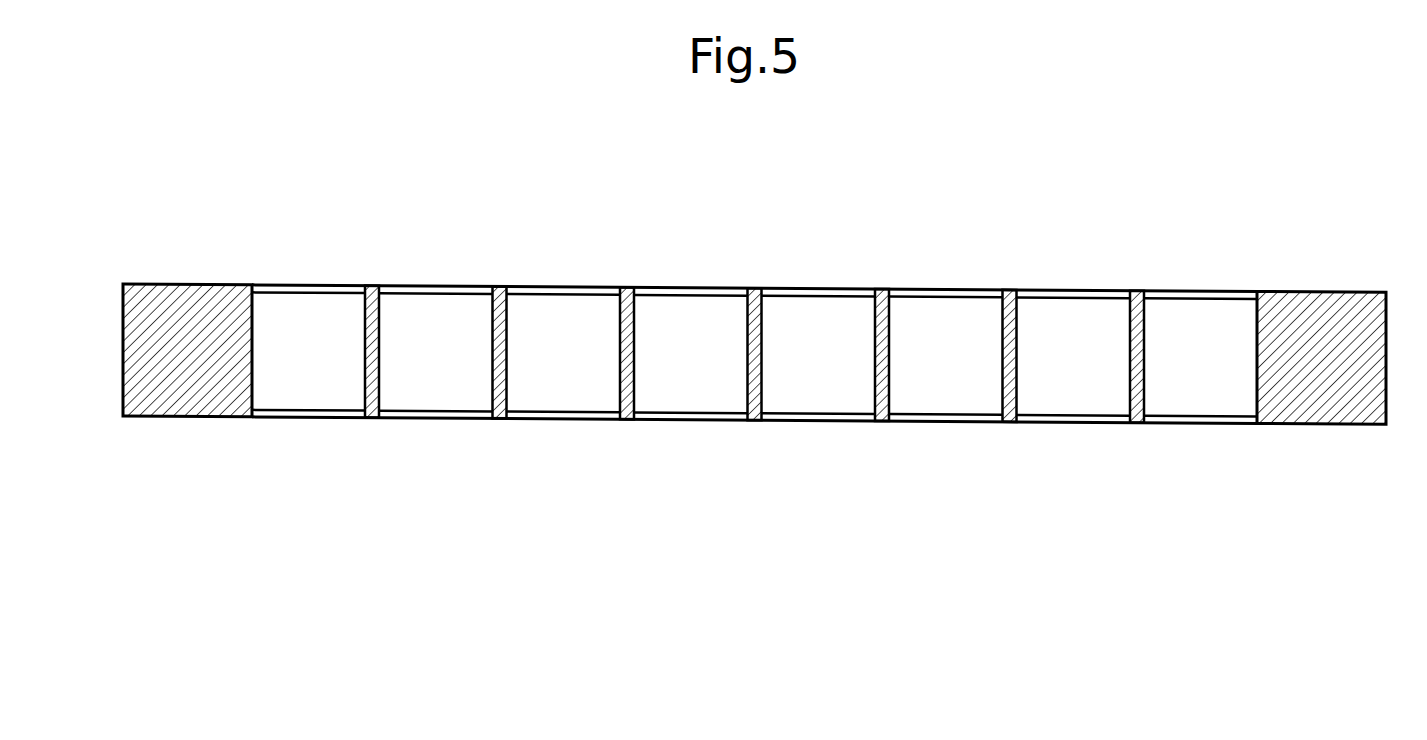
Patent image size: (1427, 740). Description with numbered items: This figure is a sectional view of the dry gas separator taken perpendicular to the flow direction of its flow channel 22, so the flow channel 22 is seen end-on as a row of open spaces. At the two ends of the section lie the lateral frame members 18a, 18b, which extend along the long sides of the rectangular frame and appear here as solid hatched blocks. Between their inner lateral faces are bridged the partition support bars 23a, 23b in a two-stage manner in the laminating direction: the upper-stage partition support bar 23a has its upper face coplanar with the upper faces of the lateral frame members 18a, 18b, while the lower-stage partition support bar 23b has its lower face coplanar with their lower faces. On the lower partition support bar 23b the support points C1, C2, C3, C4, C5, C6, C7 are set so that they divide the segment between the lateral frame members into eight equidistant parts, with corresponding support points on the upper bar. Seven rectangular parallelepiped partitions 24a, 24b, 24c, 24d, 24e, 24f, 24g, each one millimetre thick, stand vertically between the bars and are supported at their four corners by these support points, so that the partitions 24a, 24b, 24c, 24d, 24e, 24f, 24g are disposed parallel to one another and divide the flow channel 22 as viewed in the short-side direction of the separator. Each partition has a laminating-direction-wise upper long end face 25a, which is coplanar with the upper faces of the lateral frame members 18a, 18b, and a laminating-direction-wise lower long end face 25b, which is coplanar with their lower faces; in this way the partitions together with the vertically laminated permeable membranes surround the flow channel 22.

The lateral frame member 18a is at (1297, 293).
The lateral frame member 18b is at (188, 284).
The flow channel 22 is at (957, 390).
The partition support bar 23a is at (427, 284).
The partition support bar 23b is at (415, 418).
The partition 24a is at (1147, 355).
The partition 24b is at (1020, 350).
The partition 24c is at (892, 350).
The partition 24d is at (765, 353).
The partition 24e is at (638, 332).
The partition 24f is at (508, 327).
The partition 24g is at (368, 348).
The upper long end face 25a is at (750, 287).
The lower long end face 25b is at (753, 422).
The support point C1 is at (1135, 425).
The support point C2 is at (1018, 423).
The support point C3 is at (882, 422).
The support point C4 is at (765, 422).
The support point C5 is at (623, 420).
The support point C6 is at (505, 418).
The support point C7 is at (350, 417).